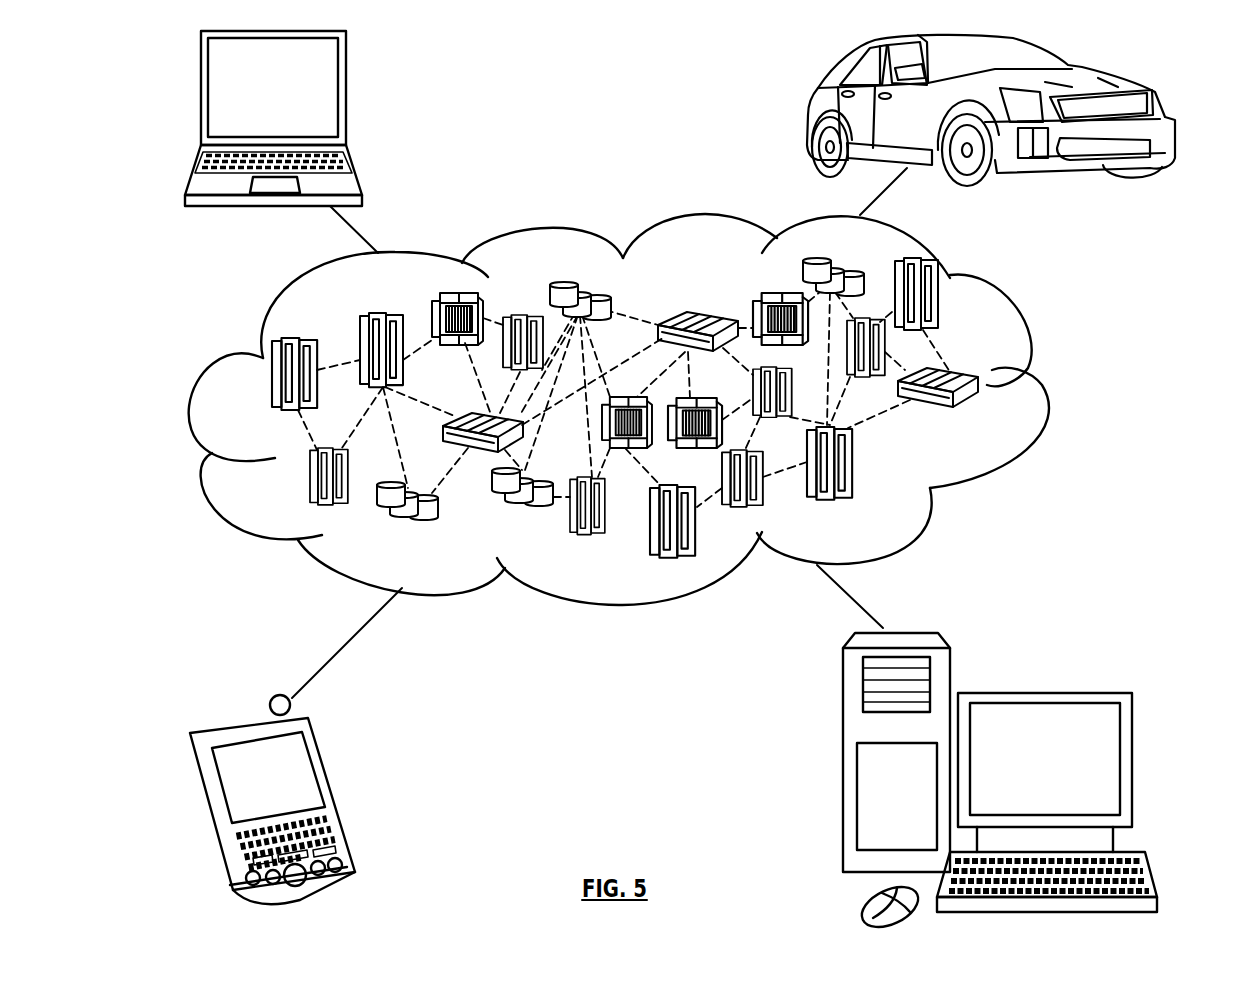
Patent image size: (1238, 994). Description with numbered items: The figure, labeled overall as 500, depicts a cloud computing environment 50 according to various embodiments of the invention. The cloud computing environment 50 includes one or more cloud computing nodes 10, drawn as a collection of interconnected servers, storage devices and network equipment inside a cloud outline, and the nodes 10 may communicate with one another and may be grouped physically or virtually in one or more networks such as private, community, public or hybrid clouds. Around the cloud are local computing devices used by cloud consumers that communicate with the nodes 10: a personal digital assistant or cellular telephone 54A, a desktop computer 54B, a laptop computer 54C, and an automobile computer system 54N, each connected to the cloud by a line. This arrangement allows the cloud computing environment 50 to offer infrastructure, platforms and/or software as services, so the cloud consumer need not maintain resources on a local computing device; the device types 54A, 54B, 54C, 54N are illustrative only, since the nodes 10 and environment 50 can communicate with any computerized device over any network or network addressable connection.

The cloud computing environment system 500 is at (97, 40).
The cloud computing environment 50 is at (645, 409).
The cloud computing node 10 is at (985, 420).
The personal digital assistant or cellular telephone 54A is at (332, 793).
The desktop computer 54B is at (1078, 665).
The laptop computer 54C is at (346, 97).
The automobile computer system 54N is at (810, 112).